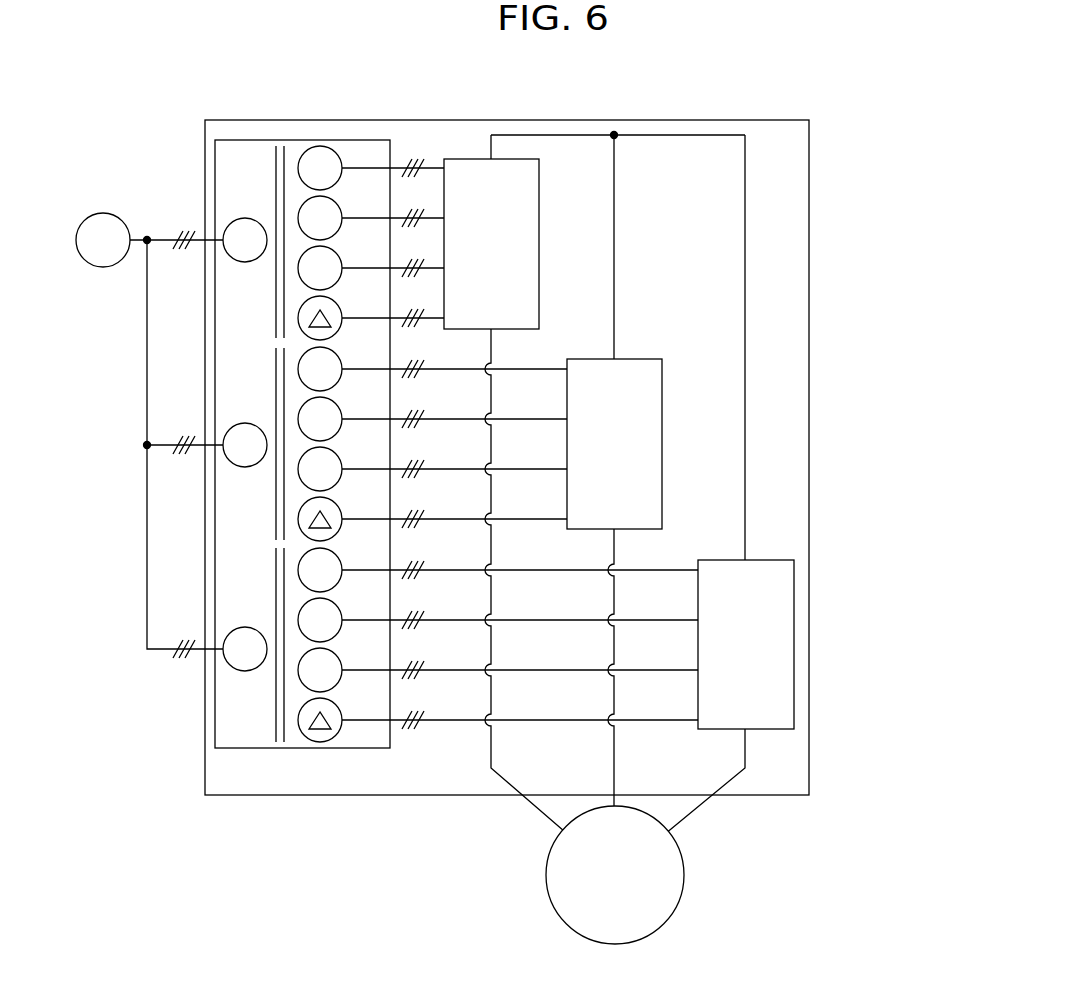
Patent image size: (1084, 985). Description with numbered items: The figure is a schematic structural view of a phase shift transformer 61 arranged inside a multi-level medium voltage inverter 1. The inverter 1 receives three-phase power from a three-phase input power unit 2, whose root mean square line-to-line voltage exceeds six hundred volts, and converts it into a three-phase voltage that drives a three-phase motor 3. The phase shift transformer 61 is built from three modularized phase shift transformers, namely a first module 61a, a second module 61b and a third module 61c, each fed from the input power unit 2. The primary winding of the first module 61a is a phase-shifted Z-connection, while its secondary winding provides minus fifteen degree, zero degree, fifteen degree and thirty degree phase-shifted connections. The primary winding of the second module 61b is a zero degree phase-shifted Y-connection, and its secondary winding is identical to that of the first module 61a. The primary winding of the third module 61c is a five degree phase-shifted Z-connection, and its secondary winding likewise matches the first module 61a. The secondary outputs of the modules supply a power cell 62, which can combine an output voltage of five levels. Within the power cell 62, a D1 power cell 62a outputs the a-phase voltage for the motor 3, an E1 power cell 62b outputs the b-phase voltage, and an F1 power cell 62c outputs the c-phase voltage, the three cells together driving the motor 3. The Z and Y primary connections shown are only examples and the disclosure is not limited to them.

The multi-level medium voltage inverter 1 is at (515, 120).
The 3-phase input power unit 2 is at (103, 213).
The 3-phase motor 3 is at (684, 872).
The phase shift transformer 61 is at (283, 140).
The first module 61a is at (262, 176).
The second module 61b is at (262, 390).
The third module 61c is at (262, 600).
The power cell 62 is at (686, 446).
The D1 power cell 62a is at (540, 243).
The E1 power cell 62b is at (662, 445).
The F1 power cell 62c is at (776, 644).